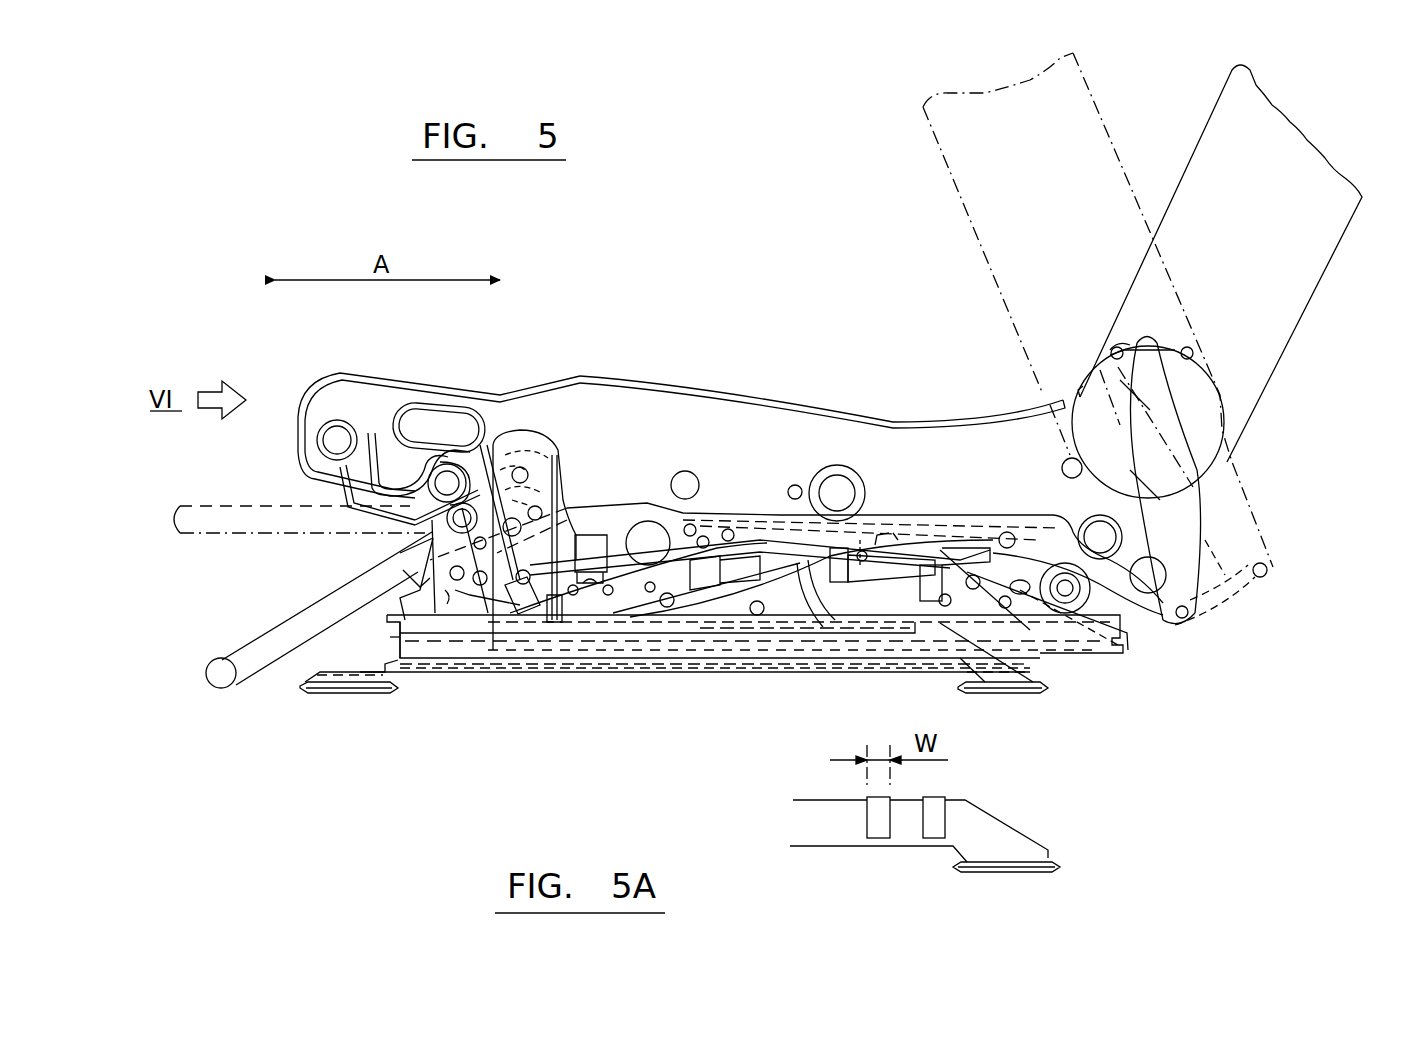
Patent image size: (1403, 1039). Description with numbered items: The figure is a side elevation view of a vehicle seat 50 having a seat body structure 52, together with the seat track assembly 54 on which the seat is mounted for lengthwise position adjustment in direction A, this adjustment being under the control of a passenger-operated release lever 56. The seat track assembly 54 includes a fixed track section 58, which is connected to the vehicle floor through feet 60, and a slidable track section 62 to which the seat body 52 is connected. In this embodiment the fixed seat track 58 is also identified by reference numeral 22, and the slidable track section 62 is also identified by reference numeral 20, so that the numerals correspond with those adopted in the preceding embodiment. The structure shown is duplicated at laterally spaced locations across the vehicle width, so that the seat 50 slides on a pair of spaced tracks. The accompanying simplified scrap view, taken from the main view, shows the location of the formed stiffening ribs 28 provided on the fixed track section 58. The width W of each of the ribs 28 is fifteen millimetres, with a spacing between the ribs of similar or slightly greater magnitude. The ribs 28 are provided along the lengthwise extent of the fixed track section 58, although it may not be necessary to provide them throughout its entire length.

In FIG. 5, the slidable track section 20 is at (1100, 608).
In FIG. 5, the fixed seat track 22 is at (736, 900).
In FIG. 5A, the fixed seat track 22 is at (807, 847).
In FIG. 5A, the formed stiffening ribs 28 is at (878, 823).
In FIG. 5, the vehicle seat 50 is at (955, 398).
In FIG. 5, the seat body structure 52 is at (740, 433).
In FIG. 5, the seat track assembly 54 is at (452, 702).
In FIG. 5, the release lever 56 is at (302, 620).
In FIG. 5, the fixed track section 58 is at (512, 670).
In FIG. 5A, the fixed track section 58 is at (850, 846).
In FIG. 5, the feet 60 is at (1163, 867).
In FIG. 5A, the feet 60 is at (1023, 873).
In FIG. 5, the slidable track section 62 is at (977, 625).